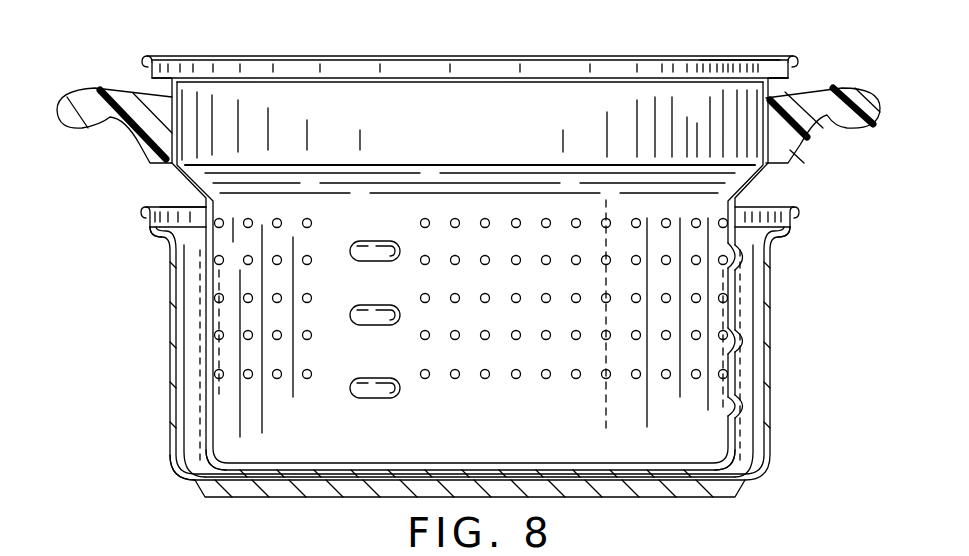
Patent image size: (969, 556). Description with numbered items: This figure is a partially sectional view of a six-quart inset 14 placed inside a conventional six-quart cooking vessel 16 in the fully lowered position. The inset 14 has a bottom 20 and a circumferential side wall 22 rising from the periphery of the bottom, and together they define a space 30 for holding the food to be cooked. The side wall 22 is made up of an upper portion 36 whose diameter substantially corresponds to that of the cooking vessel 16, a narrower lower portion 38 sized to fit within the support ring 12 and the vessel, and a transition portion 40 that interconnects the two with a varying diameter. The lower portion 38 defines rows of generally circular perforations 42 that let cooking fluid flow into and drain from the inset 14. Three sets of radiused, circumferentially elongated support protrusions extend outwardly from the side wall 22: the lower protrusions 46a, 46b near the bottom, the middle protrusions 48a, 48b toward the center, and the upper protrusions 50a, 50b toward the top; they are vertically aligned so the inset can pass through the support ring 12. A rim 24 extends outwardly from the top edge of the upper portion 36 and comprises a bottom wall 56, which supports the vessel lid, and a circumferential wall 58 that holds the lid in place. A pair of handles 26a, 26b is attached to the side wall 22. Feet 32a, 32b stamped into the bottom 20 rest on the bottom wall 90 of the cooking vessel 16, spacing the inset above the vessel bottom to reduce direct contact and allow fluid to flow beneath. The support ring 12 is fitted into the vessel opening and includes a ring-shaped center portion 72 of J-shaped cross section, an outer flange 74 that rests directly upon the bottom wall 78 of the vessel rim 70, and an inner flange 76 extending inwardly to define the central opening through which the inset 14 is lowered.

The support ring 12 is at (188, 262).
The inset 14 is at (333, 40).
The cooking vessel 16 is at (795, 425).
The bottom 20 is at (640, 488).
The side wall 22 is at (756, 294).
The rim 24 is at (790, 56).
The handle 26a is at (82, 88).
The handle 26b is at (853, 88).
The space 30 is at (502, 427).
The support foot 32a is at (277, 471).
The support foot 32b is at (697, 484).
The upper portion 36 is at (807, 137).
The lower portion 38 is at (741, 358).
The transition portion 40 is at (760, 183).
The perforations 42 is at (456, 293).
The support protrusion 46a is at (375, 399).
The support protrusion 46b is at (747, 410).
The support protrusion 48a is at (375, 327).
The support protrusion 48b is at (747, 340).
The support protrusion 50a is at (373, 263).
The support protrusion 50b is at (748, 266).
The bottom wall 56 is at (765, 62).
The circumferential wall 58 is at (788, 77).
The rim 70 is at (141, 216).
The center portion 72 is at (791, 239).
The outer flange 74 is at (796, 203).
The inner flange 76 is at (200, 212).
The bottom wall 78 is at (158, 234).
The bottom wall 90 is at (198, 488).